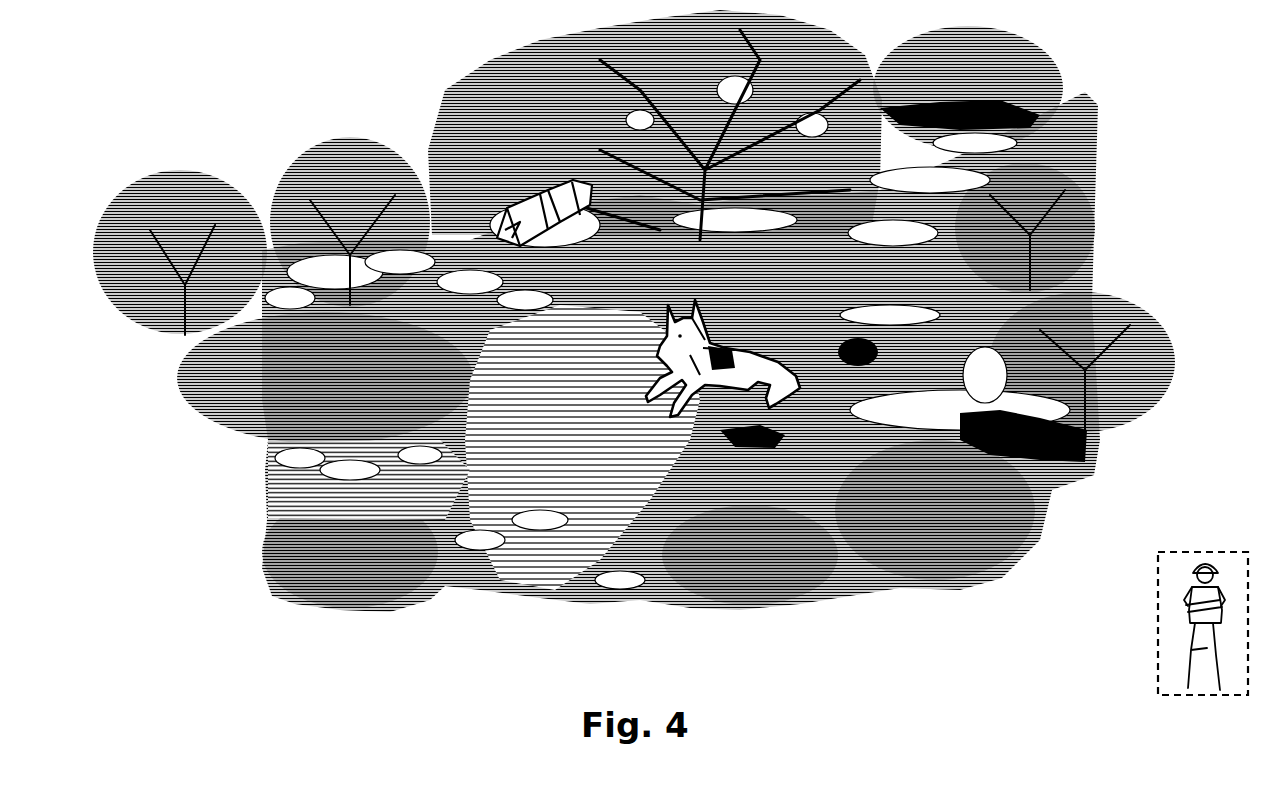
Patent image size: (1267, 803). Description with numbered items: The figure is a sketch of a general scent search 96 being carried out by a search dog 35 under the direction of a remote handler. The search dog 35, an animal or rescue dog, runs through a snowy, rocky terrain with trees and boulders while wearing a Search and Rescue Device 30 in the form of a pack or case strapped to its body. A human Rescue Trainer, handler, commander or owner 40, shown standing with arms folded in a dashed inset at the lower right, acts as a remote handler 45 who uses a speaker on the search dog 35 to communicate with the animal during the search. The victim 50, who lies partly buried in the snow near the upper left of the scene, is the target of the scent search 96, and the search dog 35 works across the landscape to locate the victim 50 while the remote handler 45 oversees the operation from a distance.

The Search and Rescue Device 30 is at (627, 484).
The search dog 35 is at (673, 400).
The human Rescue Trainer/handler/commander/owner 40 is at (1125, 644).
The remote handler 45 is at (1187, 617).
The victim 50 is at (517, 203).
The scent search 96 is at (260, 633).